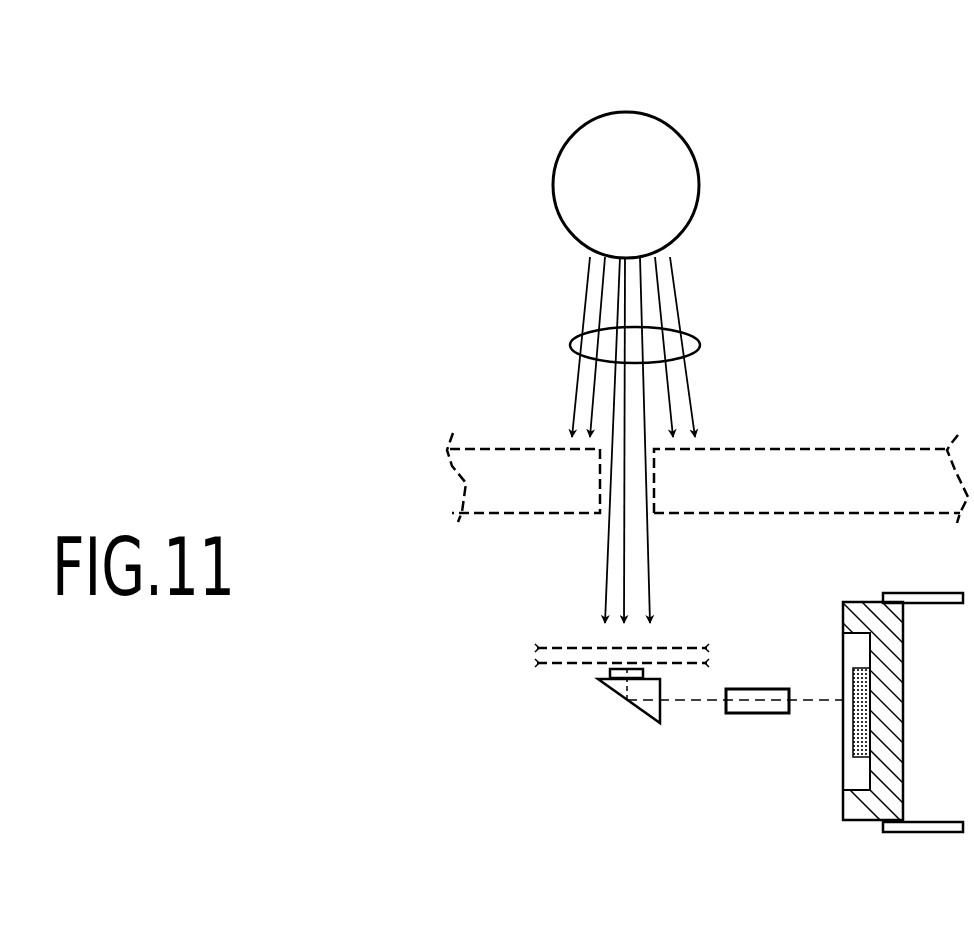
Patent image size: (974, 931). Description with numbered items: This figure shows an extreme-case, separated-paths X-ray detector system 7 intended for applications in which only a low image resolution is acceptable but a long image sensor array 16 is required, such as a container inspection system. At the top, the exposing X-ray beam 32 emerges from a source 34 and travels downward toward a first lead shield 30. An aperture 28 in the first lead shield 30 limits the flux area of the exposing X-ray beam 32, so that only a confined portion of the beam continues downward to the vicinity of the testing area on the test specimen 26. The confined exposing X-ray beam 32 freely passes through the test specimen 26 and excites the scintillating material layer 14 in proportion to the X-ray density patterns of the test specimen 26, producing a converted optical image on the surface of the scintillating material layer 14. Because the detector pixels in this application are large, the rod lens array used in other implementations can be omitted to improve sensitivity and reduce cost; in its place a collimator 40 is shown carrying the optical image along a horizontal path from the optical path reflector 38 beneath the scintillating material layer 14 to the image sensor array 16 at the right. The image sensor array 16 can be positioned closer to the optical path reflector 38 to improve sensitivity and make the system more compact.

The X-ray detector system 7 is at (493, 98).
The eye lens / cornea 34 is at (688, 143).
The exposing X-ray beam 32 is at (700, 342).
The aperture 28 is at (650, 515).
The first lead shield 30 is at (500, 447).
The test specimen 26 is at (562, 647).
The scintillating material layer 14 is at (598, 672).
The optical path reflector 38 is at (645, 715).
The collimator 40 is at (755, 713).
The image sensor array 16 is at (852, 678).